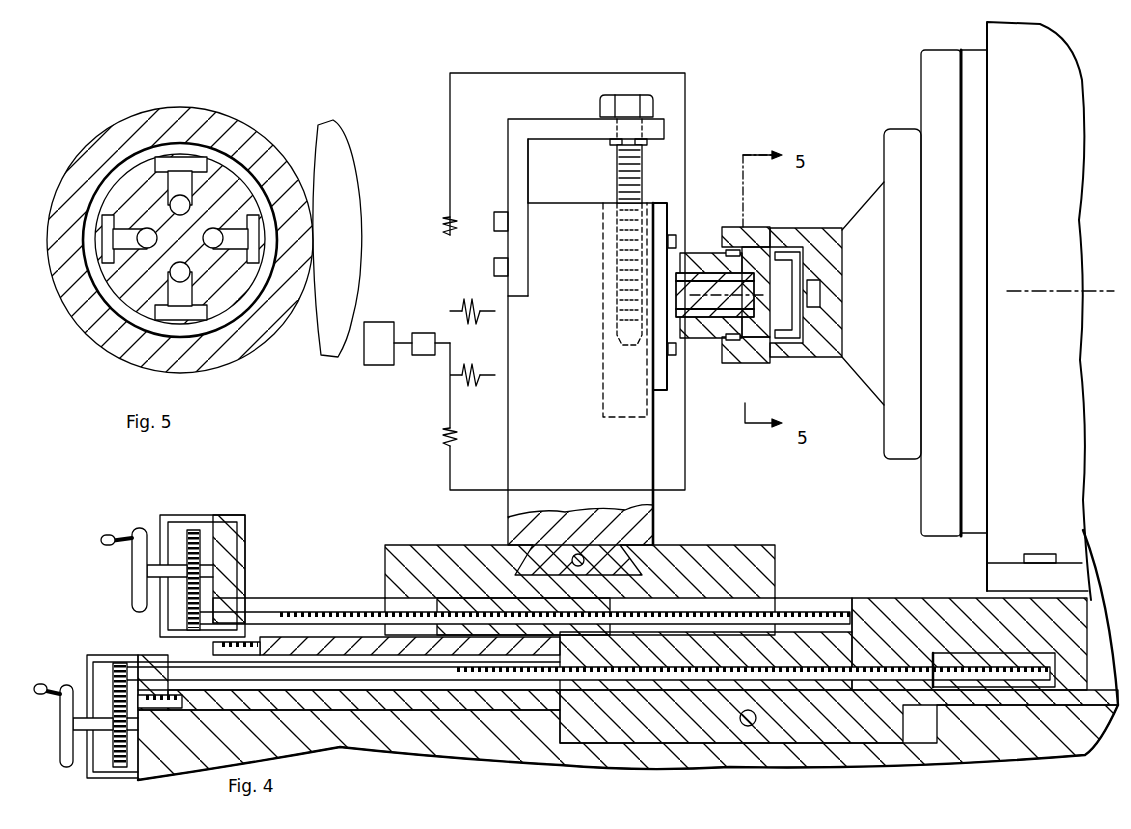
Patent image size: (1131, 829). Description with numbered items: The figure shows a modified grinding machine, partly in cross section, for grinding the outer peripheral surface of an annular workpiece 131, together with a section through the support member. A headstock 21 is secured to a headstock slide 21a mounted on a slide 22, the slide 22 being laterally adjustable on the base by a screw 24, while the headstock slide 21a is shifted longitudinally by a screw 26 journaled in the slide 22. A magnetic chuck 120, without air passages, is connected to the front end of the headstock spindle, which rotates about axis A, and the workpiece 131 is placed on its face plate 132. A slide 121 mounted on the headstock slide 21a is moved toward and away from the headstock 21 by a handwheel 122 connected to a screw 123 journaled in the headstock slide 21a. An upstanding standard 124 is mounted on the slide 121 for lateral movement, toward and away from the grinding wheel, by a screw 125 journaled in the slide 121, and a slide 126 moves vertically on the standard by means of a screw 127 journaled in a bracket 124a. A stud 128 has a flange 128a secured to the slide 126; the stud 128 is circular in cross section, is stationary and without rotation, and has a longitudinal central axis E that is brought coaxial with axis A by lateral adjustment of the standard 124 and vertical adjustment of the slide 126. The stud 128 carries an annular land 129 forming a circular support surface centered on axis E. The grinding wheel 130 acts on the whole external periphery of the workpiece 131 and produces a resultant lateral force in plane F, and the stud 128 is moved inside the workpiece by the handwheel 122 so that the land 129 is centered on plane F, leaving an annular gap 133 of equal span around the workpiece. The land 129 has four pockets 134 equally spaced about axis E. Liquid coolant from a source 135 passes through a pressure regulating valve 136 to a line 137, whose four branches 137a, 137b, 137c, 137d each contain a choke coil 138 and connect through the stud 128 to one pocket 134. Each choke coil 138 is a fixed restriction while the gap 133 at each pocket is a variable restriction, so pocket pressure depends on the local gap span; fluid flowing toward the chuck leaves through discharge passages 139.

In FIG. 4, the headstock 21 is at (987, 547).
In FIG. 4, the headstock slide 21a is at (910, 591).
In FIG. 4, the slide 22 is at (975, 708).
In FIG. 4, the screw 24 is at (757, 718).
In FIG. 4, the screw 26 is at (942, 662).
In FIG. 4, the magnetic chuck 120 is at (895, 128).
In FIG. 4, the slide 121 is at (777, 555).
In FIG. 4, the handwheel 122 is at (134, 528).
In FIG. 4, the screw 123 is at (308, 608).
In FIG. 4, the upstanding standard 124 is at (654, 528).
In FIG. 4, the bracket 124a is at (535, 117).
In FIG. 4, the screw 125 is at (585, 565).
In FIG. 4, the slide 126 is at (657, 201).
In FIG. 4, the screw 127 is at (614, 172).
In FIG. 5, the stud 128 is at (153, 209).
In FIG. 4, the stud 128 is at (702, 343).
In FIG. 4, the flange 128a is at (678, 363).
In FIG. 5, the annular land 129 is at (220, 167).
In FIG. 4, the annular land 129 is at (731, 357).
In FIG. 5, the grinding wheel 130 is at (321, 147).
In FIG. 5, the workpiece 131 is at (171, 106).
In FIG. 4, the workpiece 131 is at (773, 252).
In FIG. 4, the face plate 132 is at (762, 360).
In FIG. 5, the annular gap 133 is at (113, 295).
In FIG. 4, the annular gap 133 is at (722, 252).
In FIG. 5, the pockets 134 is at (190, 315).
In FIG. 4, the pockets 134 is at (738, 253).
In FIG. 4, the source of liquid coolant 135 is at (378, 366).
In FIG. 4, the pressure regulating valve 136 is at (430, 356).
In FIG. 4, the line 137 is at (451, 321).
In FIG. 5, the branch line 137a is at (188, 199).
In FIG. 4, the branch line 137a is at (450, 188).
In FIG. 5, the branch line 137b is at (190, 273).
In FIG. 4, the branch line 137b is at (451, 481).
In FIG. 5, the branch line 137c is at (147, 249).
In FIG. 4, the branch line 137c is at (490, 316).
In FIG. 5, the branch line 137d is at (214, 228).
In FIG. 4, the branch line 137d is at (490, 371).
In FIG. 4, the choke coil 138 is at (442, 218).
In FIG. 4, the discharge passages 139 is at (777, 360).
In FIG. 4, the axis A is at (1010, 292).
In FIG. 5, the longitudinal central axis E is at (180, 245).
In FIG. 4, the longitudinal central axis E is at (771, 293).
In FIG. 4, the plane F is at (743, 187).